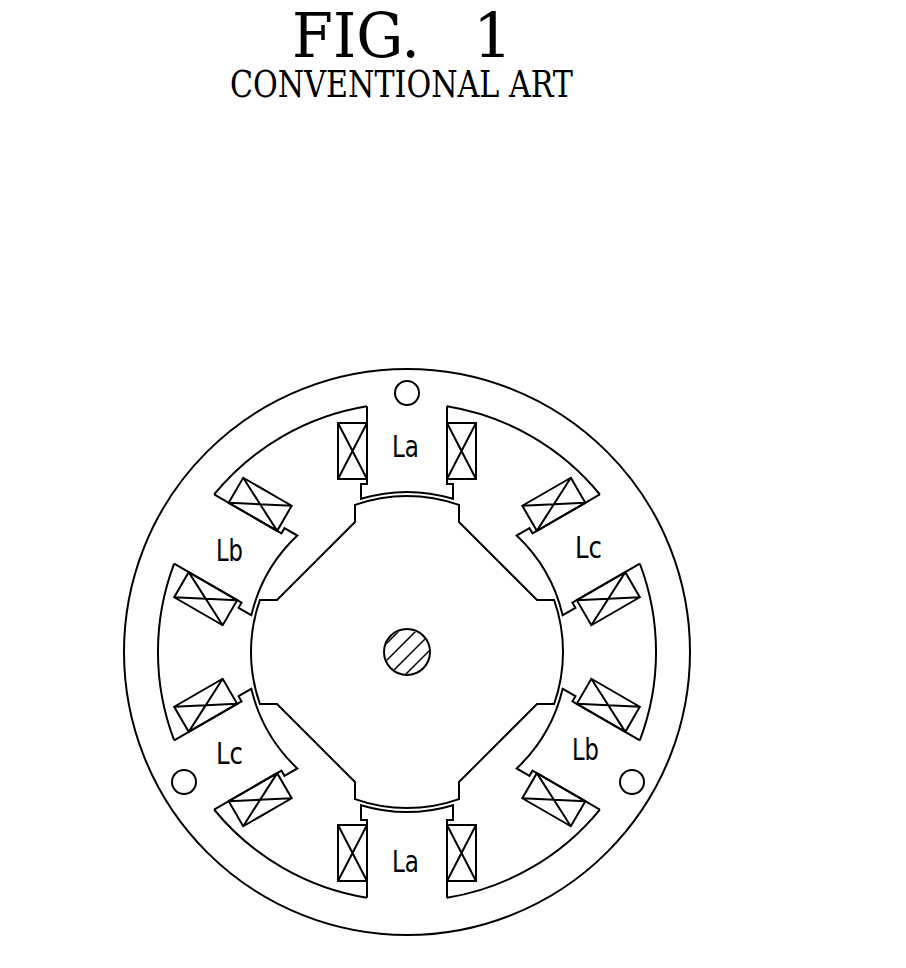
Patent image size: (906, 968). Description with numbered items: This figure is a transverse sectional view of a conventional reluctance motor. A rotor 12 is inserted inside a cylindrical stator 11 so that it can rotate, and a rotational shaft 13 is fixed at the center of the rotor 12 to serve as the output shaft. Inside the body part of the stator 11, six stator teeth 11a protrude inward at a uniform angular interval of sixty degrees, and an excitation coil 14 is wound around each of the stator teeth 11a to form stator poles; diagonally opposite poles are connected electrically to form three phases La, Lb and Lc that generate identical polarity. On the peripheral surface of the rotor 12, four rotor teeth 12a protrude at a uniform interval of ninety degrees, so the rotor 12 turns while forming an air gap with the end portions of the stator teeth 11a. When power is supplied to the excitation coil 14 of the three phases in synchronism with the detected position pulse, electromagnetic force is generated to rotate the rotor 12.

The stator 11 is at (473, 642).
The stator teeth 11a is at (597, 568).
The rotor 12 is at (512, 577).
The rotor teeth 12a is at (558, 650).
The rotational shaft 13 is at (400, 642).
The excitation coil 14 is at (613, 602).